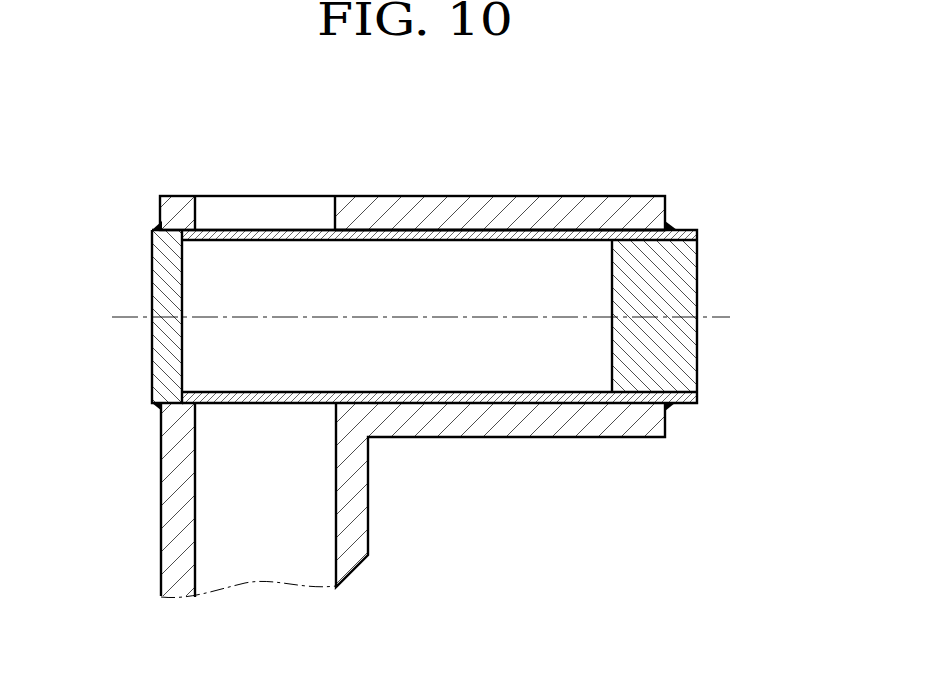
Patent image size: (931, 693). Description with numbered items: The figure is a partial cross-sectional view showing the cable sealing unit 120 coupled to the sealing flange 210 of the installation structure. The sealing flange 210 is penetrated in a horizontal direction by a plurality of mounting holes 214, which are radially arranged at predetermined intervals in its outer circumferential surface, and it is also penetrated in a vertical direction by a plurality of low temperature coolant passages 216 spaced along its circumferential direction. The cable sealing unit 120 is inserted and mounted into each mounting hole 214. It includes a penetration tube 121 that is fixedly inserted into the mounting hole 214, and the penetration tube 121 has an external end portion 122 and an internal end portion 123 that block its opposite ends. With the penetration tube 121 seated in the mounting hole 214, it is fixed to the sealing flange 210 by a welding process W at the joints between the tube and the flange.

The cable sealing unit 120 is at (437, 302).
The penetration tube 121 is at (593, 236).
The external end portion 122 is at (685, 363).
The internal end portion 123 is at (165, 361).
The sealing flange 210 is at (412, 396).
The mounting hole 214 is at (383, 233).
The low temperature coolant passage 216 is at (195, 540).
The welding process W is at (160, 229).